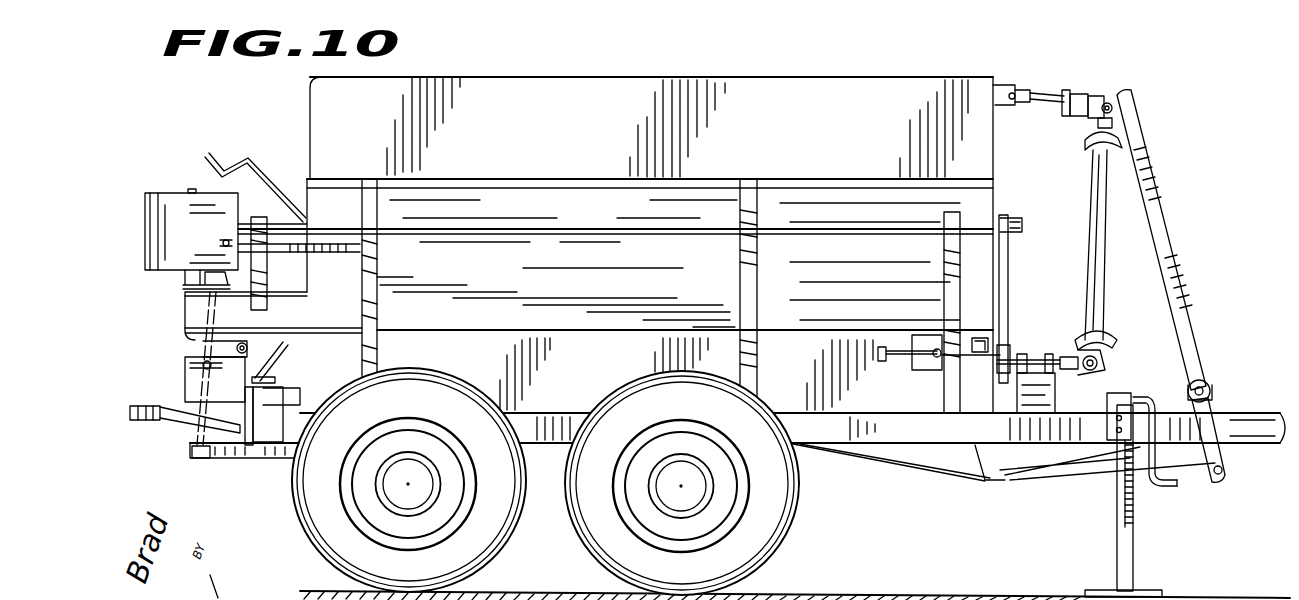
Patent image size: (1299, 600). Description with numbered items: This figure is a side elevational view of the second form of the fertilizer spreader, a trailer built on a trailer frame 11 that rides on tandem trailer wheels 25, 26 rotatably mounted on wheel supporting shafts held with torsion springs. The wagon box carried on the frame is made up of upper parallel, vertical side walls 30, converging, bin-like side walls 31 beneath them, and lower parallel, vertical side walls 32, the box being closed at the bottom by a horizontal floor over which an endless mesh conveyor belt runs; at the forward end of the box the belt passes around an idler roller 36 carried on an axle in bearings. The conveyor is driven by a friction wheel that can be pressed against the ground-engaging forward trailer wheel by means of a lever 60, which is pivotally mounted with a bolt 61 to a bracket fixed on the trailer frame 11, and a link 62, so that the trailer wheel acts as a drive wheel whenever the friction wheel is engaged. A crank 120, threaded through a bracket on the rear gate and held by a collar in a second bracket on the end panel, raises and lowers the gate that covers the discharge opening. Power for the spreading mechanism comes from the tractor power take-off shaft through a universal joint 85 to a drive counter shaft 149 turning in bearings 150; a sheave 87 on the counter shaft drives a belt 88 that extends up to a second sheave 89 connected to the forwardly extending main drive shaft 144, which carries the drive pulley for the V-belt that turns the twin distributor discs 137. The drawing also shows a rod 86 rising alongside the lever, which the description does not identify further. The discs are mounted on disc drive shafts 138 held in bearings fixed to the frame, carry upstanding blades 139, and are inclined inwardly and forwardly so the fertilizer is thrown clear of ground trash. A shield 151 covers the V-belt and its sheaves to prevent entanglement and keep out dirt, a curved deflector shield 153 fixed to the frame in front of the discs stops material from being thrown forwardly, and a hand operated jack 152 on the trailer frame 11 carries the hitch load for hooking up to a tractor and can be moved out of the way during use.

The trailer frame 11 is at (860, 455).
The trailer wheel 25 is at (590, 556).
The trailer wheel 26 is at (516, 538).
The upper parallel vertical side wall 30 is at (578, 75).
The converging bin-like side wall 31 is at (522, 165).
The lower parallel vertical side wall 32 is at (770, 346).
The idler roller 36 is at (930, 368).
The lever 60 is at (1175, 252).
The bolt 61 is at (1212, 384).
The link 62 is at (1200, 482).
The universal joint 85 is at (1070, 352).
The connecting rod 86 is at (1095, 265).
The sheave 87 is at (972, 338).
The belt 88 is at (1005, 312).
The second sheave 89 is at (1012, 225).
The crank 120 is at (270, 142).
The distributor disc 137 is at (163, 424).
The disc drive shaft 138 is at (187, 394).
The blade 139 is at (148, 412).
The main drive shaft 144 is at (560, 230).
The drive counter shaft 149 is at (1038, 356).
The bearing 150 is at (1050, 372).
The shield 151 is at (175, 190).
The hand operated jack 152 is at (1118, 558).
The curved deflector shield 153 is at (252, 452).